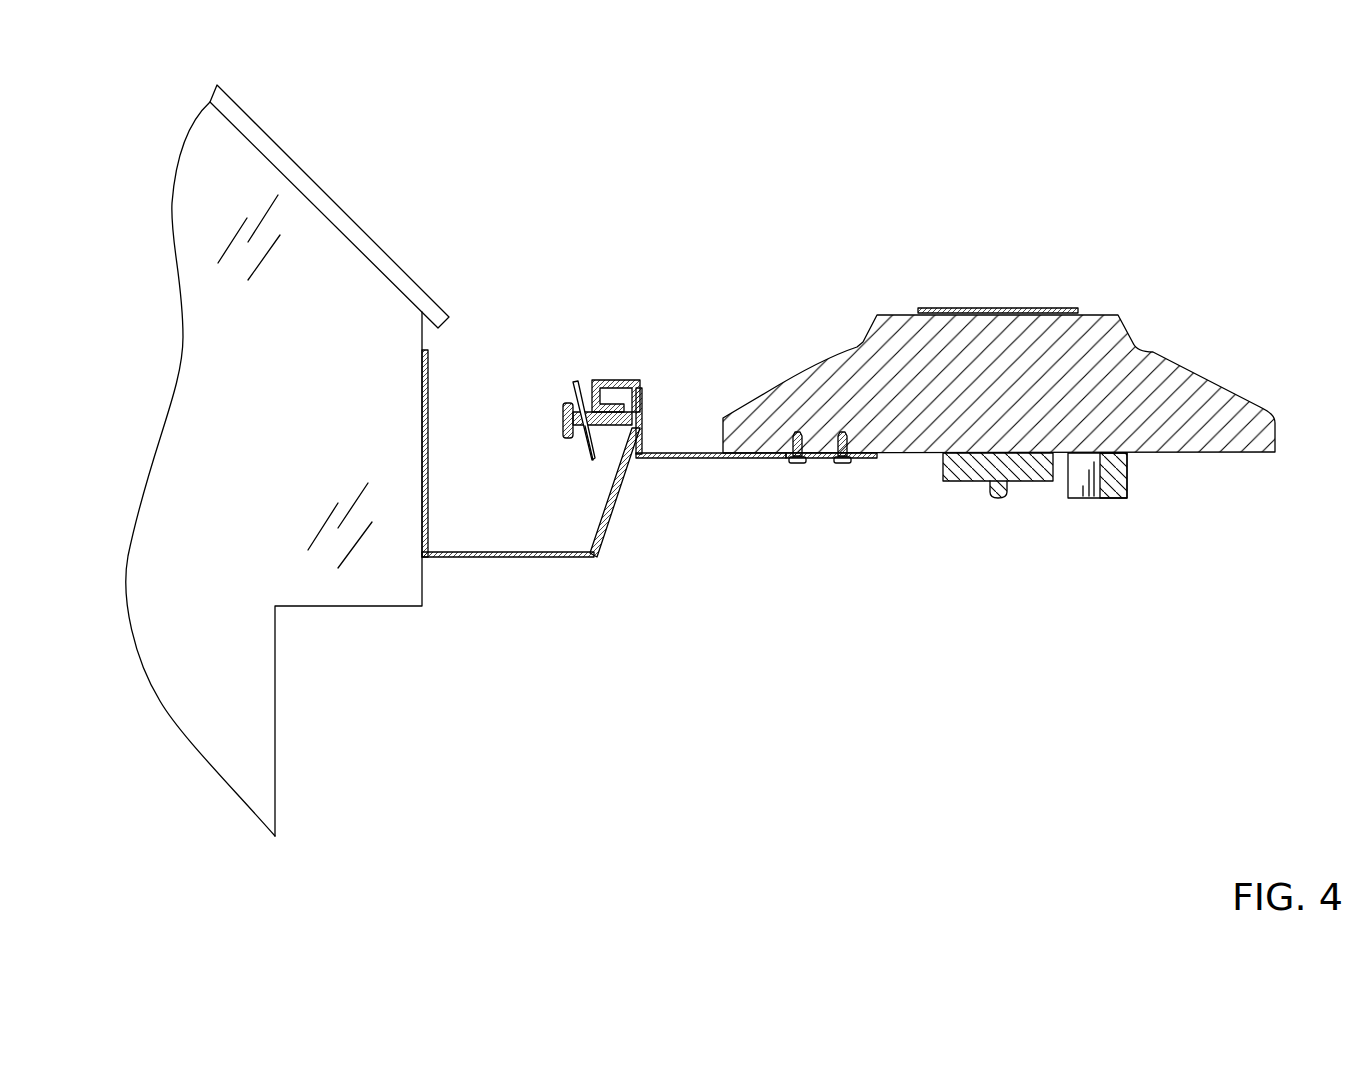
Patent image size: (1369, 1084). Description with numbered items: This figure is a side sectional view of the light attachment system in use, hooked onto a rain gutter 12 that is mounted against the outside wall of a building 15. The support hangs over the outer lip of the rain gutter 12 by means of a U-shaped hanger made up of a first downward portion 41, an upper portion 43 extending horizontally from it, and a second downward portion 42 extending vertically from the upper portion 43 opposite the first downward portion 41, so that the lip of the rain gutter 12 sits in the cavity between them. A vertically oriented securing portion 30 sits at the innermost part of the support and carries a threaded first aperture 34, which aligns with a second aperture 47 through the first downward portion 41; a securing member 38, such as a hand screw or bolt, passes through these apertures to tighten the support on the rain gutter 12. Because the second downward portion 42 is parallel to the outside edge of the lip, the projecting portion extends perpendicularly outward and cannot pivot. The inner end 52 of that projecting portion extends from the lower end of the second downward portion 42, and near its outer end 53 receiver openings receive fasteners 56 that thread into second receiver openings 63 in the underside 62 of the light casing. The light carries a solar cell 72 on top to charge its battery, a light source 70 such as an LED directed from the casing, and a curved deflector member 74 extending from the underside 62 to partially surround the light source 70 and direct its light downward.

The building 15 is at (205, 395).
The rain gutter 12 is at (443, 564).
The second aperture 47 is at (603, 428).
The second downward portion 42 is at (648, 398).
The inner end 52 is at (663, 460).
The outer end 53 is at (868, 460).
The securing portion 30 is at (570, 385).
The upper portion 43 is at (612, 380).
The securing member 38 is at (563, 422).
The first downward portion 41 is at (585, 382).
The first aperture 34 is at (580, 445).
The underside 62 is at (1208, 452).
The solar cell 72 is at (1015, 308).
The second receiver openings 63 is at (842, 432).
The fasteners 56 is at (797, 463).
The light source 70 is at (1000, 498).
The deflector member 74 is at (1110, 500).